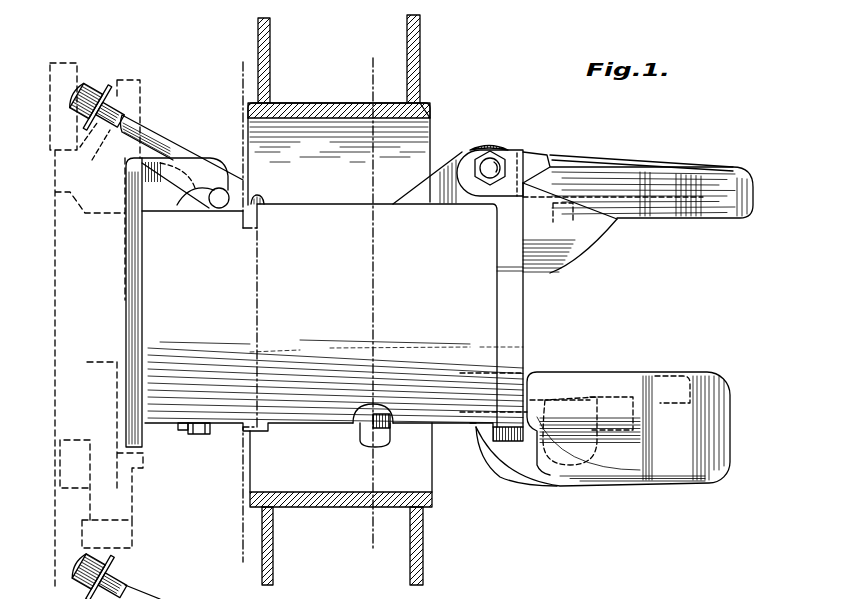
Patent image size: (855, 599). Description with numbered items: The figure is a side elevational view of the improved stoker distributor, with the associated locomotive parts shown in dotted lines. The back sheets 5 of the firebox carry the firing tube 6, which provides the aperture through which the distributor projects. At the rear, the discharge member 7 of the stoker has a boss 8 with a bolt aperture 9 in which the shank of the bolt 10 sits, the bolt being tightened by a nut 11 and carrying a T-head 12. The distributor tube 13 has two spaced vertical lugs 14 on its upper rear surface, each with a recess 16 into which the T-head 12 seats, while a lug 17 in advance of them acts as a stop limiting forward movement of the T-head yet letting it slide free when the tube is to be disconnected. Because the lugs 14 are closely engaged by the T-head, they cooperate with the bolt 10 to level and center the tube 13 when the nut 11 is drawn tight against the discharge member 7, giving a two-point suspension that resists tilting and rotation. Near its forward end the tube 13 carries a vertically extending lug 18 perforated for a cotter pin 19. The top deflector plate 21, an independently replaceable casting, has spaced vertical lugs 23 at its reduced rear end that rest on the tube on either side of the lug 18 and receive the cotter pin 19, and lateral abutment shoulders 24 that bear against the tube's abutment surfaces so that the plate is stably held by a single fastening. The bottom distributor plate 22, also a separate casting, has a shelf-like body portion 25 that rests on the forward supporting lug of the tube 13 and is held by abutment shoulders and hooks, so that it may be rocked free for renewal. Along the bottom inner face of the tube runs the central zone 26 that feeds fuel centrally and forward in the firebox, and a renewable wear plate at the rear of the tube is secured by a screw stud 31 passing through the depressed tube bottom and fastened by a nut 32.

The back sheets 5 is at (270, 33).
The firing tube 6 is at (230, 75).
The discharge member 7 is at (100, 200).
The boss 8 is at (133, 104).
The bolt aperture 9 is at (104, 138).
The bolt 10 is at (153, 136).
The nut 11 is at (101, 85).
The T-head 12 is at (213, 210).
The distributor tube 13 is at (334, 337).
The lugs 14 is at (203, 165).
The recess 16 is at (362, 452).
The lug 17 is at (266, 201).
The vertically extending lug 18 is at (488, 150).
The cotter pin 19 is at (496, 164).
The top deflector plate 21 is at (638, 180).
The bottom distributor plate 22 is at (695, 370).
The vertical lugs 23 is at (468, 182).
The lateral abutment shoulders 24 is at (557, 263).
The body portion 25 is at (580, 373).
The central zone 26 is at (414, 376).
The screw stud 31 is at (200, 434).
The nut 32 is at (184, 430).